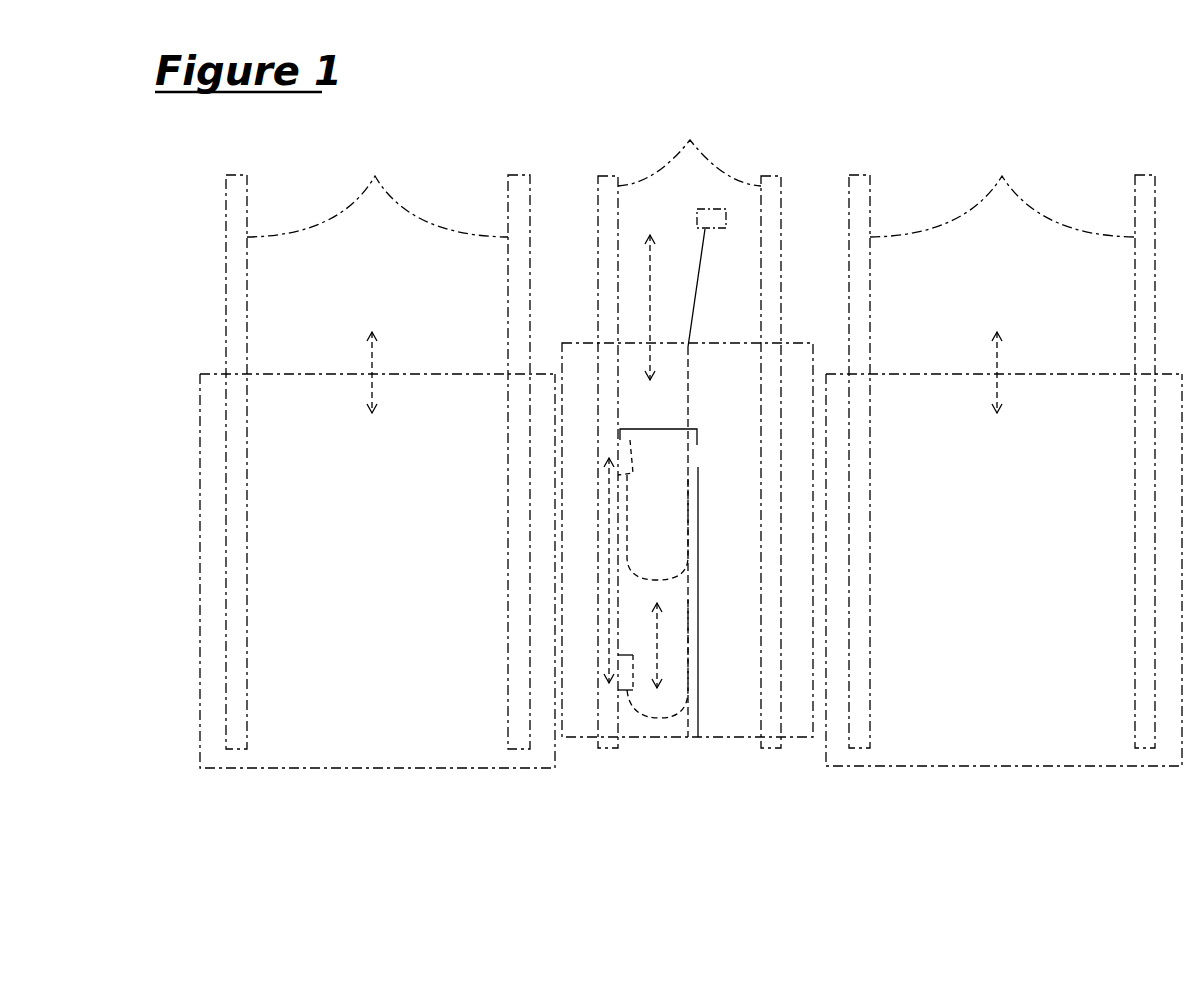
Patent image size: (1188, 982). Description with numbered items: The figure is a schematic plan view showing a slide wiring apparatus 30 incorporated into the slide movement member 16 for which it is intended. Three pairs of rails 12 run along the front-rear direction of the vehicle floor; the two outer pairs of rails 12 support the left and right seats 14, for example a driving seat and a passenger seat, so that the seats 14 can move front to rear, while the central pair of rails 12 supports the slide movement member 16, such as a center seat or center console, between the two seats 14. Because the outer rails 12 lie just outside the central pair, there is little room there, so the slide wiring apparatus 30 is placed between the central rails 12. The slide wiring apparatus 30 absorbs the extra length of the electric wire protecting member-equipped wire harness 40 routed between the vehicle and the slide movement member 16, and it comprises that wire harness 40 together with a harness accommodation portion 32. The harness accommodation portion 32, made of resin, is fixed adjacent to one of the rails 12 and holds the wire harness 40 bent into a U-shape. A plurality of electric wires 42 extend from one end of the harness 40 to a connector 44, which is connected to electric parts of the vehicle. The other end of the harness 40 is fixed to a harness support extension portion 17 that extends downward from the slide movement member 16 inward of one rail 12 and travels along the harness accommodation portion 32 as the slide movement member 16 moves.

The rails 12 is at (691, 170).
The seats 14 is at (286, 374).
The slide movement member 16 is at (667, 347).
The harness support extension portion 17 is at (634, 463).
The slide wiring apparatus 30 is at (705, 563).
The harness accommodation portion 32 is at (698, 468).
The electric wire protecting member-equipped wire harness 40 is at (667, 592).
The electric wires 42 is at (700, 253).
The connector 44 is at (712, 209).